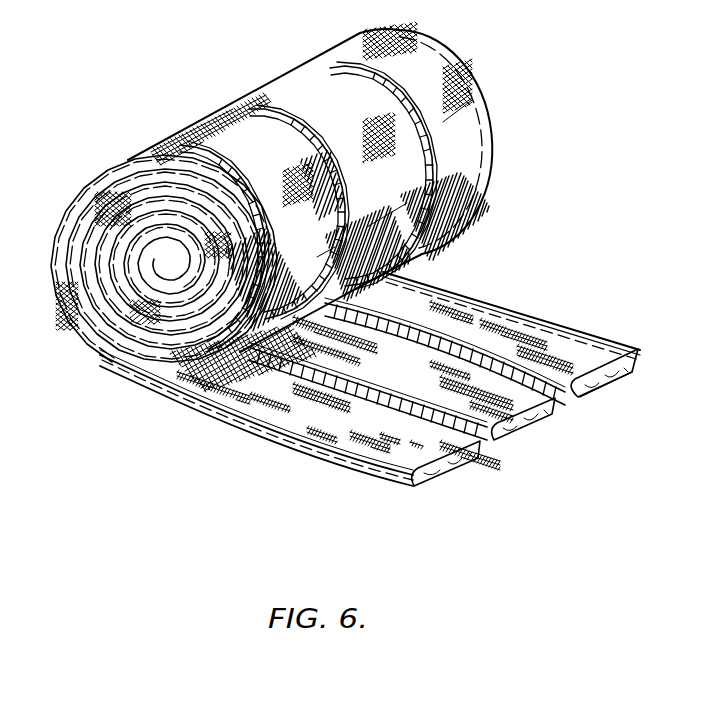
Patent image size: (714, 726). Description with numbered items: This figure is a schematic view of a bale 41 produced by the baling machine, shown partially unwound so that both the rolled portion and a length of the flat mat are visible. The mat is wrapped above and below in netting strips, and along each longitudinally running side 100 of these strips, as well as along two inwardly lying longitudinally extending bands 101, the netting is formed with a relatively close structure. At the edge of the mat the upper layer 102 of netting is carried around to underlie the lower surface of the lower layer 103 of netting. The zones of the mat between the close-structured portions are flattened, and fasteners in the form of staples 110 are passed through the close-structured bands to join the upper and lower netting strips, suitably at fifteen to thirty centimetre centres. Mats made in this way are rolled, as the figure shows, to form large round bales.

The bale 41 is at (239, 70).
The longitudinally running side of the netting strips 100 is at (520, 302).
The inwardly lying longitudinally extending band 101 is at (560, 397).
The upper layer of netting 102 is at (593, 357).
The lower layer of netting 103 is at (610, 386).
The staples 110 is at (370, 225).